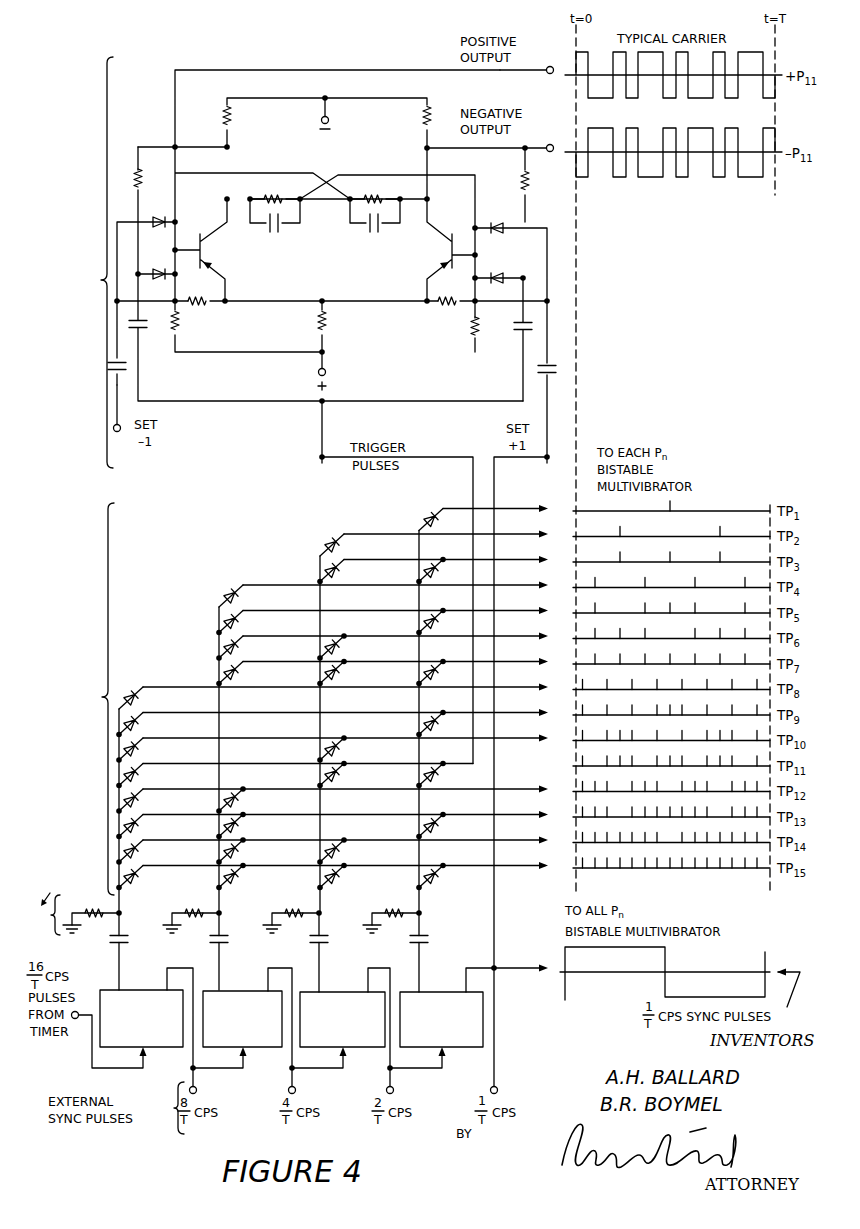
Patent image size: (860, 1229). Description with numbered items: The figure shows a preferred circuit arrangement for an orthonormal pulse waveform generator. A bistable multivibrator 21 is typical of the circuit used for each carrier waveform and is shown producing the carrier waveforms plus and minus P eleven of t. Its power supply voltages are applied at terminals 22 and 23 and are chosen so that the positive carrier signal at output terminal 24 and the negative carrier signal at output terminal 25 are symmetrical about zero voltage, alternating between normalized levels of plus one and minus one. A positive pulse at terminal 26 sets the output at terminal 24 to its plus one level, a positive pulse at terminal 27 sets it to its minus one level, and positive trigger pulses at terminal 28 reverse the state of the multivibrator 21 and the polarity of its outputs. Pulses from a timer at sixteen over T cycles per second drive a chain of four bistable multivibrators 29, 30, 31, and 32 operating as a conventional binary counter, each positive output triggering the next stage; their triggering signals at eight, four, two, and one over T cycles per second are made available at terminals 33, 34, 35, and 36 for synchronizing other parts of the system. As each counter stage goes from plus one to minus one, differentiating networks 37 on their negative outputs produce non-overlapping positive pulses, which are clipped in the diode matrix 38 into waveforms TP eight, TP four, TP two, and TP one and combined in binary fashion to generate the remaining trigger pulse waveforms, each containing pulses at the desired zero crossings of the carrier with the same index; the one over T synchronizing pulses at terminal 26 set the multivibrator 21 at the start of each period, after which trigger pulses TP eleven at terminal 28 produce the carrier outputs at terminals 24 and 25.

The bistable multivibrator 21 is at (88, 256).
The power supply terminal 22 is at (329, 121).
The power supply terminal 23 is at (326, 372).
The positive output terminal 24 is at (549, 74).
The negative output terminal 25 is at (550, 152).
The set terminal 26 is at (546, 465).
The set terminal 27 is at (116, 432).
The trigger terminal 28 is at (322, 469).
The bistable multivibrator 29 is at (110, 988).
The bistable multivibrator 30 is at (248, 989).
The bistable multivibrator 31 is at (349, 990).
The bistable multivibrator 32 is at (450, 990).
The synchronizing terminal 33 is at (197, 1089).
The synchronizing terminal 34 is at (296, 1089).
The synchronizing terminal 35 is at (394, 1089).
The synchronizing terminal 36 is at (498, 1089).
The differentiating networks 37 is at (227, 918).
The diode matrix 38 is at (98, 692).